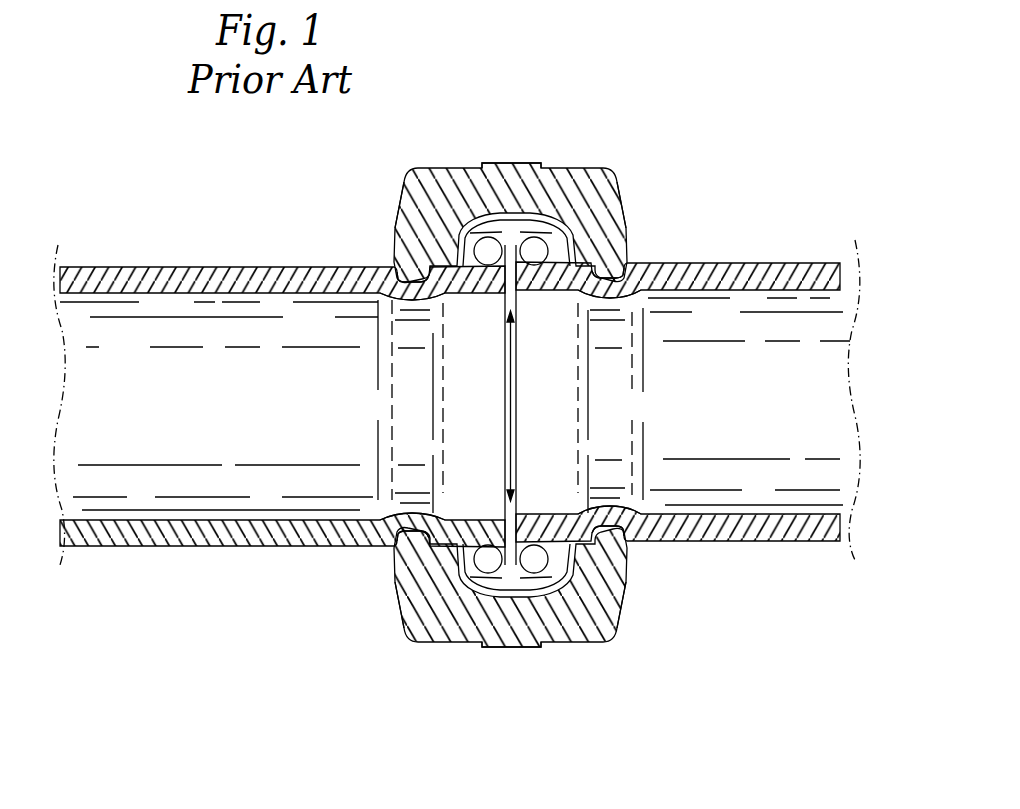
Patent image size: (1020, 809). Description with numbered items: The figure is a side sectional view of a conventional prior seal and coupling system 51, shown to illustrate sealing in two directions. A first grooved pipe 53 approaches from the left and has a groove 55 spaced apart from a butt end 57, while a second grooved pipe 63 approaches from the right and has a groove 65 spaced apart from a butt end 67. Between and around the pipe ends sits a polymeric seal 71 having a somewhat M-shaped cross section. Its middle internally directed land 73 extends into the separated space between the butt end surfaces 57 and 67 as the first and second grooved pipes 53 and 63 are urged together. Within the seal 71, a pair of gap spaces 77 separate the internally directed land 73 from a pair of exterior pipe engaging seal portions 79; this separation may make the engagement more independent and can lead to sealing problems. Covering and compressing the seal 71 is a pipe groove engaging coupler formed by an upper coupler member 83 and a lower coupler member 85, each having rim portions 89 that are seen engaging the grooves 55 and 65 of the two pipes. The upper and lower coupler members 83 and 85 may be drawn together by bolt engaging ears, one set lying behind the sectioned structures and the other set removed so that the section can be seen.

The prior seal and coupling system 51 is at (376, 711).
The first grooved pipe 53 is at (168, 265).
The groove 55 is at (397, 262).
The butt end 57 is at (505, 298).
The second grooved pipe 63 is at (787, 262).
The groove 65 is at (622, 262).
The butt end 67 is at (505, 514).
The polymeric seal 71 is at (523, 207).
The middle internally directed land 73 is at (513, 322).
The gap spaces 77 is at (473, 223).
The exterior pipe engaging seal portions 79 is at (401, 200).
The upper coupler member 83 is at (505, 165).
The lower coupler member 85 is at (526, 645).
The rim portions 89 is at (410, 300).